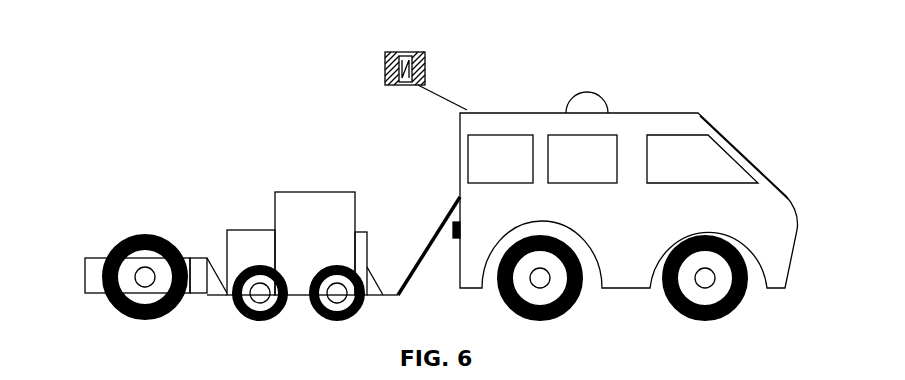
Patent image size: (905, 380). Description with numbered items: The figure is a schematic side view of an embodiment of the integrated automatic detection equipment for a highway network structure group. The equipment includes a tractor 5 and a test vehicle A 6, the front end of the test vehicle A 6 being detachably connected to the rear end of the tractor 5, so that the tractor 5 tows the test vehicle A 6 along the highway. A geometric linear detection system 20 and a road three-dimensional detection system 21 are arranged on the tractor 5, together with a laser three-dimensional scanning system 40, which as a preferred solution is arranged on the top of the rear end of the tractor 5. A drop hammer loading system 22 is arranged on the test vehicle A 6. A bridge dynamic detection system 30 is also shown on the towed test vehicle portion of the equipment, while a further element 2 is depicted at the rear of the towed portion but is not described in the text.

The trailer frame 2 is at (93, 267).
The bridge dynamic detection system 30 is at (143, 275).
The test vehicle A 6 is at (252, 248).
The drop hammer loading system 22 is at (322, 205).
The road 3D detection system 21 is at (455, 228).
The tractor 5 is at (755, 210).
The geometric linear detection system 20 is at (590, 95).
The laser 3D scanning system 40 is at (425, 55).